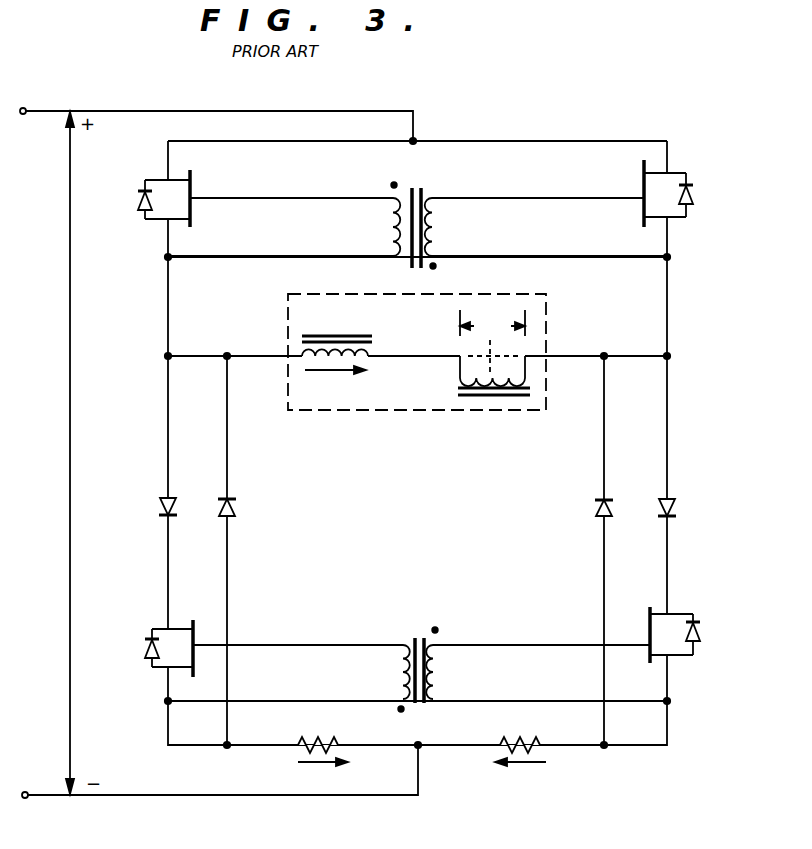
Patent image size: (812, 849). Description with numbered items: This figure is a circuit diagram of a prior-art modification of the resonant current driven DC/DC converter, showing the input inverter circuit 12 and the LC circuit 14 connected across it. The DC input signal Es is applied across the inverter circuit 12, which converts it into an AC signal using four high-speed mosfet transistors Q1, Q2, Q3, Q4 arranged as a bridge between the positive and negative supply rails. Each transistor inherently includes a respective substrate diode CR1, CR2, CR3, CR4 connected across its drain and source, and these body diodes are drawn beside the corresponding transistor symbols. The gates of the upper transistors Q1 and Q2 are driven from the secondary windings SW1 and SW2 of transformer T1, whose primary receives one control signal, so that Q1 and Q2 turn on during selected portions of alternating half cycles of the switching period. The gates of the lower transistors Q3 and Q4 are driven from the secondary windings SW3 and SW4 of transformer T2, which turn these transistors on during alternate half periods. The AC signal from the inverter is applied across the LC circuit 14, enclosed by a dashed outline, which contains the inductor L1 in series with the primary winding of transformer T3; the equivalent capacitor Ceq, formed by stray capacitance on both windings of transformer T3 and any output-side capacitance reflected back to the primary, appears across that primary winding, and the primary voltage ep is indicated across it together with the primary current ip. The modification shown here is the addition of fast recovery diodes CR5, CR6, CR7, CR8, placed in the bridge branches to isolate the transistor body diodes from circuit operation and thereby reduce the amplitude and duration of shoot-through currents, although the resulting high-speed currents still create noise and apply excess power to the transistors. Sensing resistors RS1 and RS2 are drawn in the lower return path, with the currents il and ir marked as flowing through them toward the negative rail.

The input inverter circuit 12 is at (688, 152).
The LC circuit 14 is at (288, 322).
The mosfet transistor Q1 is at (192, 204).
The mosfet transistor Q2 is at (642, 212).
The mosfet transistor Q3 is at (197, 627).
The mosfet transistor Q4 is at (647, 627).
The substrate diode CR1 is at (137, 205).
The substrate diode CR2 is at (696, 196).
The substrate diode CR3 is at (145, 649).
The substrate diode CR4 is at (702, 633).
The fast recovery diode CR5 is at (158, 505).
The fast recovery diode CR6 is at (236, 507).
The fast recovery diode CR7 is at (595, 507).
The fast recovery diode CR8 is at (676, 507).
The transformer T1 is at (413, 217).
The transformer T2 is at (418, 679).
The transformer T3 is at (469, 370).
The secondary winding SW1 is at (392, 237).
The secondary winding SW2 is at (458, 232).
The secondary winding SW3 is at (400, 670).
The secondary winding SW4 is at (438, 680).
The inductor L1 is at (337, 333).
The sensing resistor RS1 is at (514, 738).
The sensing resistor RS2 is at (342, 738).
The equivalent capacitor Ceq is at (420, 370).
The DC input signal Es is at (70, 453).
The primary current ip is at (335, 382).
The current ir is at (323, 773).
The current il is at (520, 773).
The primary voltage ep is at (492, 316).